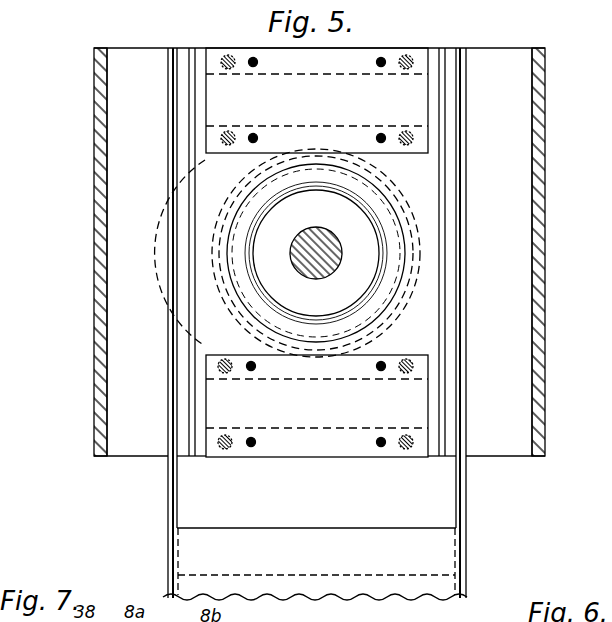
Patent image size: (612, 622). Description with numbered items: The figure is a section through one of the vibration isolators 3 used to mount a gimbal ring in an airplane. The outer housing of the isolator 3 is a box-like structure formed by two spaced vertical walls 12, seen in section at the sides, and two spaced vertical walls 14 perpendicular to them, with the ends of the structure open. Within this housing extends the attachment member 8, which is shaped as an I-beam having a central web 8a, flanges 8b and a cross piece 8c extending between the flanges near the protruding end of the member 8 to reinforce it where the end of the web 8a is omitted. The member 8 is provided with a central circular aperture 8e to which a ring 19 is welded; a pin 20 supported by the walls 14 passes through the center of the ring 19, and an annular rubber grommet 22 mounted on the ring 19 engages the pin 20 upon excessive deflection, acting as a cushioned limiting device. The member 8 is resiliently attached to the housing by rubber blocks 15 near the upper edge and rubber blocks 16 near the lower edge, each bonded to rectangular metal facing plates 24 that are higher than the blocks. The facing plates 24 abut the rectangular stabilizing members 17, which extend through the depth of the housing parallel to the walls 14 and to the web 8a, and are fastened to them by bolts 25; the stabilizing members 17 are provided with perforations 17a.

The isolator 3 is at (80, 90).
The attachment member 8 is at (162, 498).
The central web 8a is at (206, 297).
The flanges 8b is at (168, 365).
The cross piece 8c is at (320, 540).
The central circular aperture 8e is at (222, 250).
The vertical walls 12 is at (100, 318).
The vertical walls 14 is at (498, 58).
The rubber blocks 15 is at (353, 80).
The rubber blocks 16 is at (352, 425).
The stabilizing members 17 is at (468, 158).
The perforations 17a is at (243, 205).
The ring 19 is at (404, 209).
The pin 20 is at (318, 228).
The annular rubber grommet 22 is at (316, 320).
The facing plates 24 is at (243, 53).
The bolts 25 is at (253, 66).